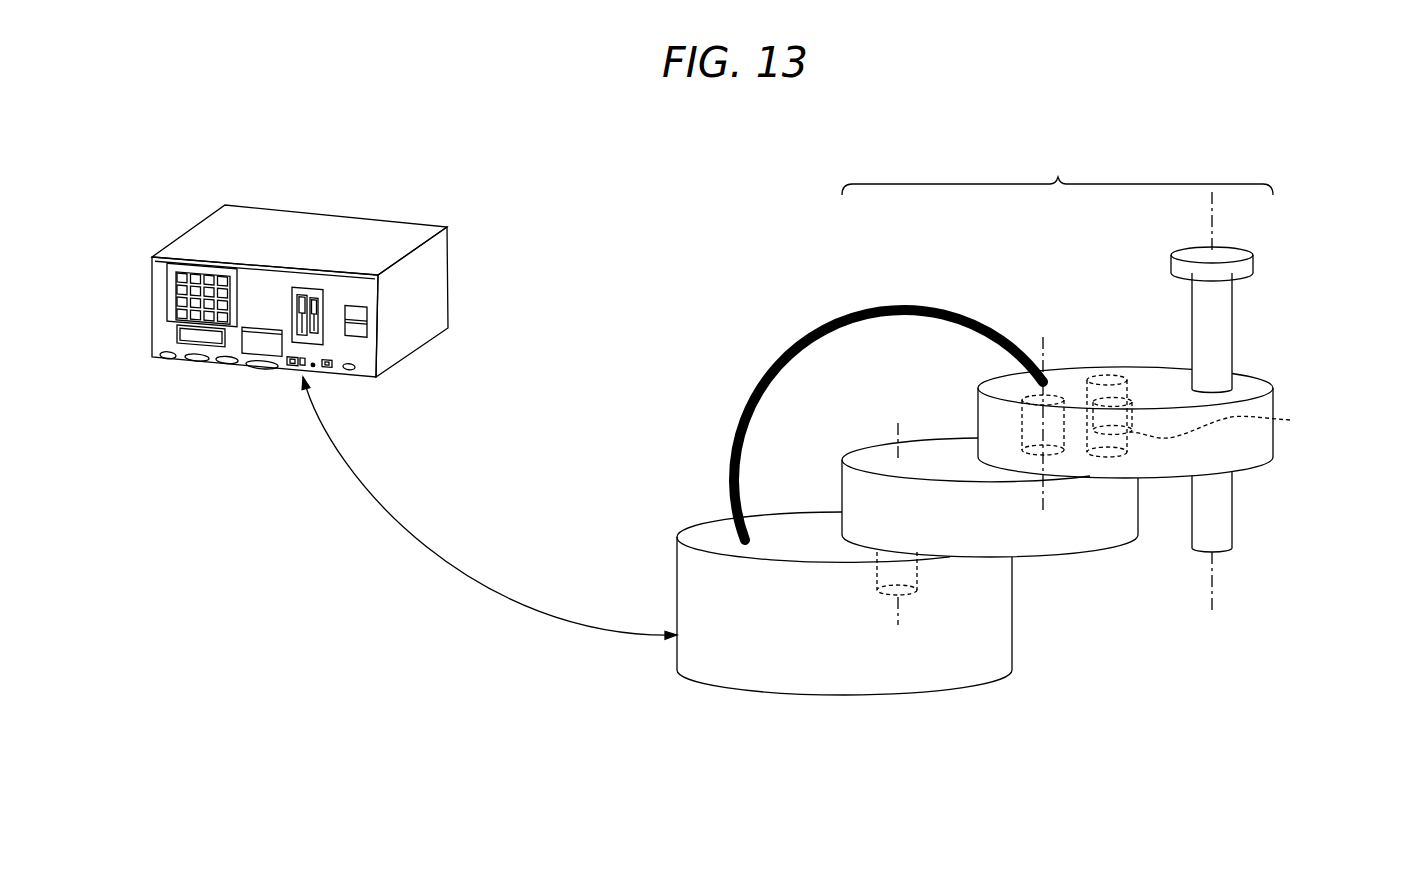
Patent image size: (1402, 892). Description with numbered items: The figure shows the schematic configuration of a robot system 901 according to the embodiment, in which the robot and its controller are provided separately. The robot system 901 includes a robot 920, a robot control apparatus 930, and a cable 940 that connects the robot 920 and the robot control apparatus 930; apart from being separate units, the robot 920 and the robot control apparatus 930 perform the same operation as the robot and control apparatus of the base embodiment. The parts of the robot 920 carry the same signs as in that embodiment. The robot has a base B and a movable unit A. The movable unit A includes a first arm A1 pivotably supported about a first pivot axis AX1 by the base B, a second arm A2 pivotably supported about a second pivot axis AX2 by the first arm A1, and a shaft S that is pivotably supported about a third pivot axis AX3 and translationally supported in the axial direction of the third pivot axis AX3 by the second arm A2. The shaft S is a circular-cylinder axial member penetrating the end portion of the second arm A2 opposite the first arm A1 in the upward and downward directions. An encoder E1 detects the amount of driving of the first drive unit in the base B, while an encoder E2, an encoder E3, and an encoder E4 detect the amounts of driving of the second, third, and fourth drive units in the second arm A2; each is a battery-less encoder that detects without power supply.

The robot system 901 is at (633, 233).
The robot 920 is at (758, 326).
The robot control apparatus 930 is at (398, 220).
The cable 940 is at (377, 503).
The movable unit A is at (1057, 174).
The first arm A1 is at (842, 482).
The second arm A2 is at (978, 392).
The base B is at (687, 570).
The shaft S is at (1197, 297).
The first pivot axis AX1 is at (898, 433).
The second pivot axis AX2 is at (1043, 344).
The third pivot axis AX3 is at (1212, 222).
The encoder E1 is at (877, 587).
The encoder E2 is at (1022, 415).
The encoder E3 is at (1117, 377).
The encoder E4 is at (1224, 423).